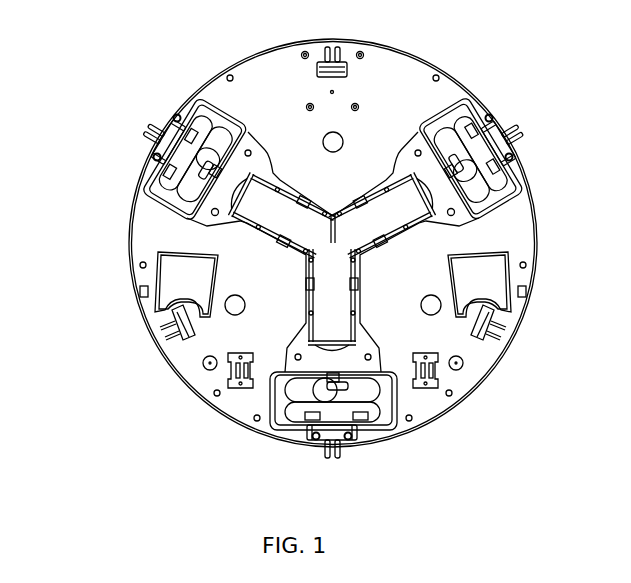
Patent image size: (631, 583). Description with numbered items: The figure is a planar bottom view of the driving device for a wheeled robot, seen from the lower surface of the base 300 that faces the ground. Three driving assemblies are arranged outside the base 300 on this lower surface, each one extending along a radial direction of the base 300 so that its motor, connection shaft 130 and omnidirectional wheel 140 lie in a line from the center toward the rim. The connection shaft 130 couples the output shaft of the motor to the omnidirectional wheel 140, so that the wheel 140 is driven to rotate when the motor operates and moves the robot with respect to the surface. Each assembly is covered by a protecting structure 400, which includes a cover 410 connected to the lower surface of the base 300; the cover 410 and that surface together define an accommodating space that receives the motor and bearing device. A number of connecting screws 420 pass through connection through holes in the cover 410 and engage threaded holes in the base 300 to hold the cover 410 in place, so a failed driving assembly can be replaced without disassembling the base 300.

The base 300 is at (408, 82).
The protecting structure 400 is at (60, 82).
The cover 410 is at (168, 125).
The connecting screws 420 is at (152, 170).
The connection shaft 130 is at (491, 118).
The omnidirectional wheel 140 is at (509, 157).